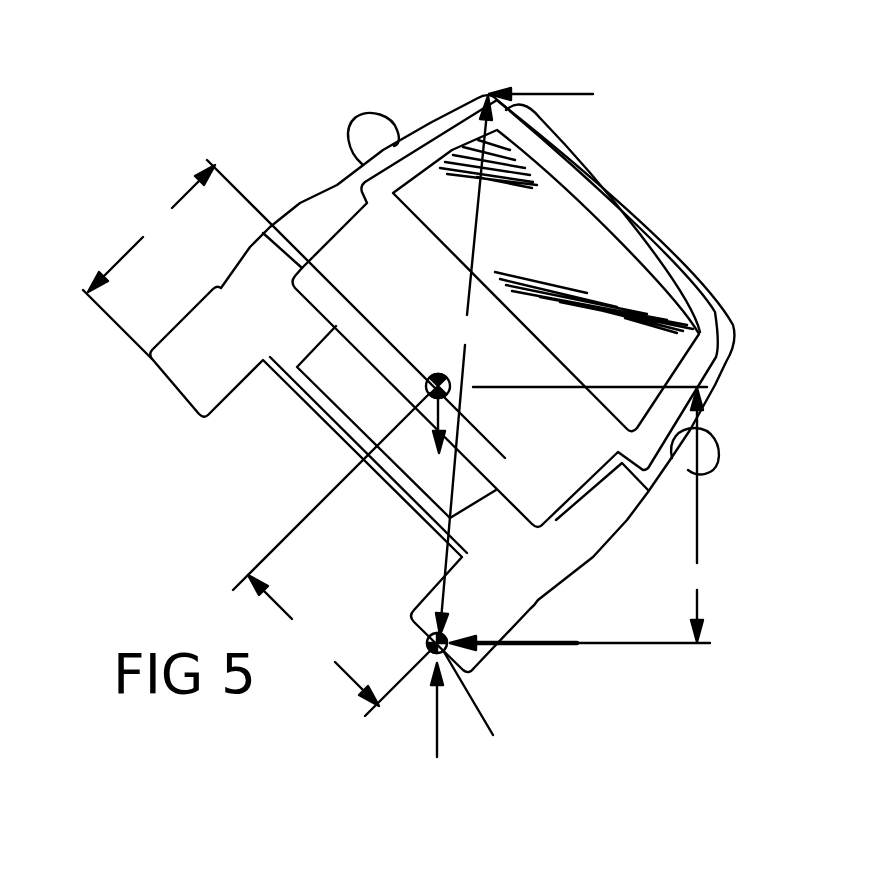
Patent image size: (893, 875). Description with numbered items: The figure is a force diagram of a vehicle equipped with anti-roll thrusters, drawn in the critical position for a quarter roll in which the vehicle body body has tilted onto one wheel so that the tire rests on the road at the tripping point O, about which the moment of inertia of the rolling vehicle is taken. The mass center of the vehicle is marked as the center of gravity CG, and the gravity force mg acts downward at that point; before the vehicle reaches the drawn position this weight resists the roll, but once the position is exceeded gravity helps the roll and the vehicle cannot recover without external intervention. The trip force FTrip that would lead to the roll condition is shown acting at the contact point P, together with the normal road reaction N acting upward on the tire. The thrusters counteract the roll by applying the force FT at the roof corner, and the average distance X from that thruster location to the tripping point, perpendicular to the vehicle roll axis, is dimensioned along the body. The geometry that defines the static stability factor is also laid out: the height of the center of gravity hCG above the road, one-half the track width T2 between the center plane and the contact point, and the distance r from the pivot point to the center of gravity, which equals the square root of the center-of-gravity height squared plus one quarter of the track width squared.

The vehicle body (rear view, tilted) body is at (442, 383).
The center of gravity CG is at (438, 386).
The tire contact point P is at (437, 643).
The force F_T FT is at (541, 74).
The average distance X is at (464, 365).
The gravity force mg is at (460, 429).
The distance r is at (591, 515).
The trip force F_TRIP FTrip is at (513, 665).
The normal force N is at (424, 710).
The 0 point O is at (476, 708).
The height of the center of gravity h_CG hCG is at (294, 309).
The one-half the track width T/2 T2 is at (331, 554).